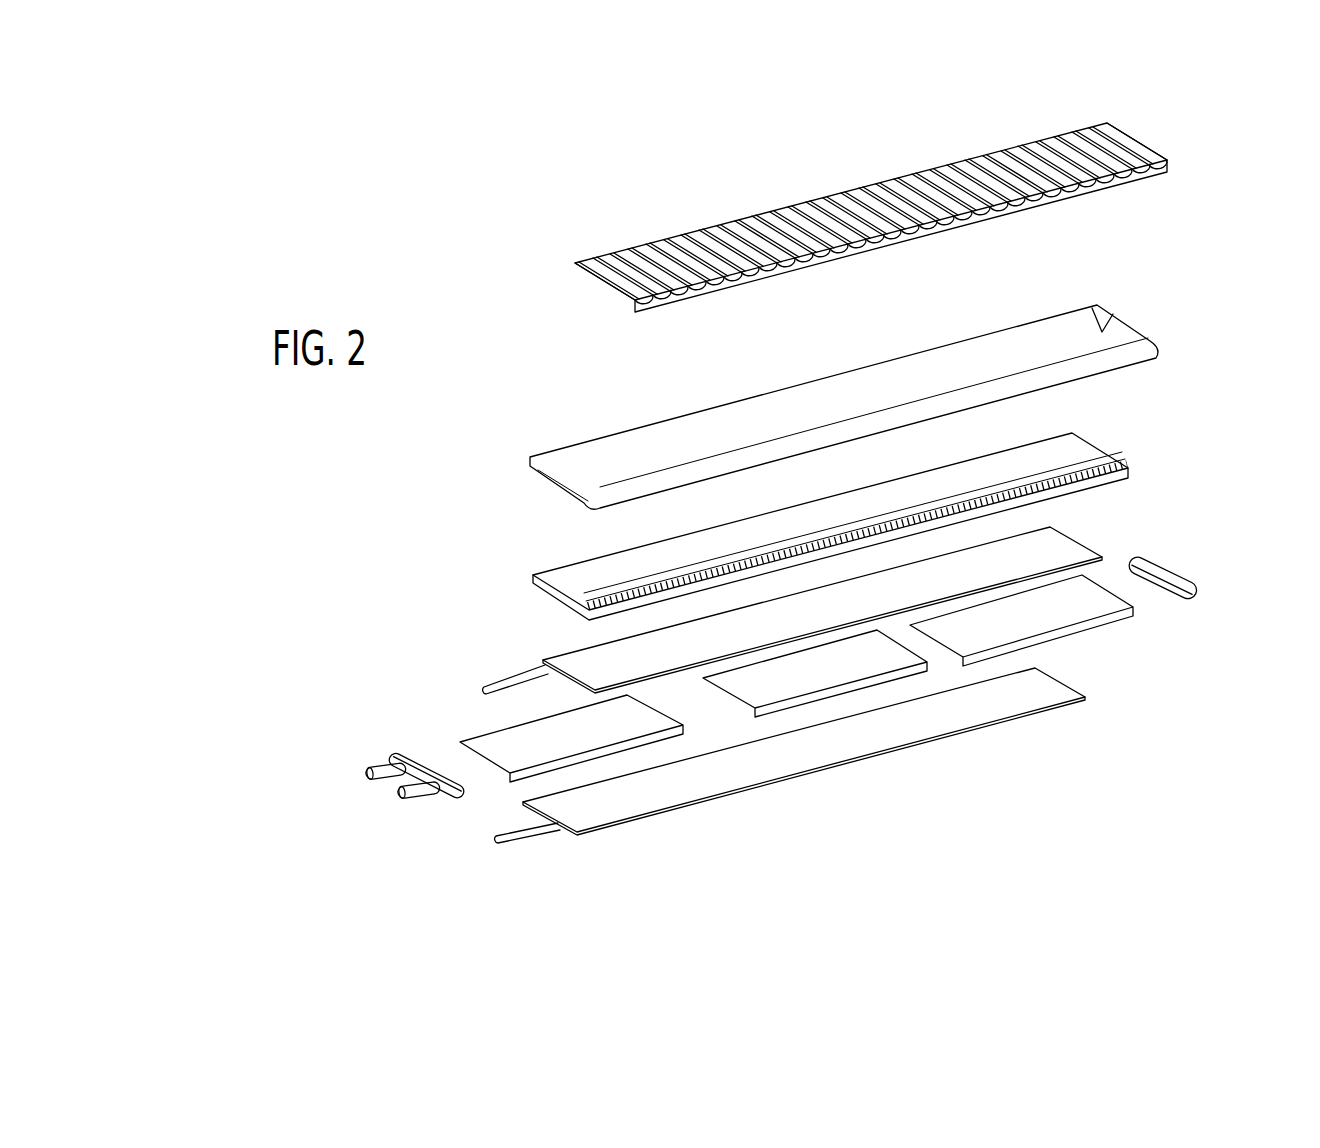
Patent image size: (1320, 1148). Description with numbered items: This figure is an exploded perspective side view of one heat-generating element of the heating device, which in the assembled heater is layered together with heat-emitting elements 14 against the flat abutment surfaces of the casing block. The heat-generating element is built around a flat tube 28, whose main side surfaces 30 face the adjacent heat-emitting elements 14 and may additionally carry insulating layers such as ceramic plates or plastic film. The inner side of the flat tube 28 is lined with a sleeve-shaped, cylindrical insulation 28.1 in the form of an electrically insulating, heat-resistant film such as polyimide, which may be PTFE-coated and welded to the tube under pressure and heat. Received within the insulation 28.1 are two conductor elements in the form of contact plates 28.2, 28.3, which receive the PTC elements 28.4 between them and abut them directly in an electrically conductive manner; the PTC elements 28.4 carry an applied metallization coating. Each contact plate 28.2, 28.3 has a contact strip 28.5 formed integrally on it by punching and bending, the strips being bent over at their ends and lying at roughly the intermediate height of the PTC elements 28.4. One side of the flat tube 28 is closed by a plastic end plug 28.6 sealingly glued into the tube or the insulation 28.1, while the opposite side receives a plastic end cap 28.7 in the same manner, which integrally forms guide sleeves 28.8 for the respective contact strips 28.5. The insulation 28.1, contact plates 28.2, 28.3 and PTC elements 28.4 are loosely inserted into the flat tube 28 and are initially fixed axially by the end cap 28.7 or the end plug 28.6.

The heat-emitting element 14 is at (1178, 136).
The flat tube 28 is at (1180, 337).
The main side surface 30 is at (1113, 313).
The insulation 28.1 is at (1142, 433).
The contact plate 28.2 is at (1062, 545).
The contact plate 28.3 is at (773, 767).
The PTC element 28.4 is at (622, 725).
The contact strip 28.5 is at (500, 684).
The end plug 28.6 is at (1205, 590).
The end cap 28.7 is at (455, 796).
The guide sleeve 28.8 is at (370, 772).